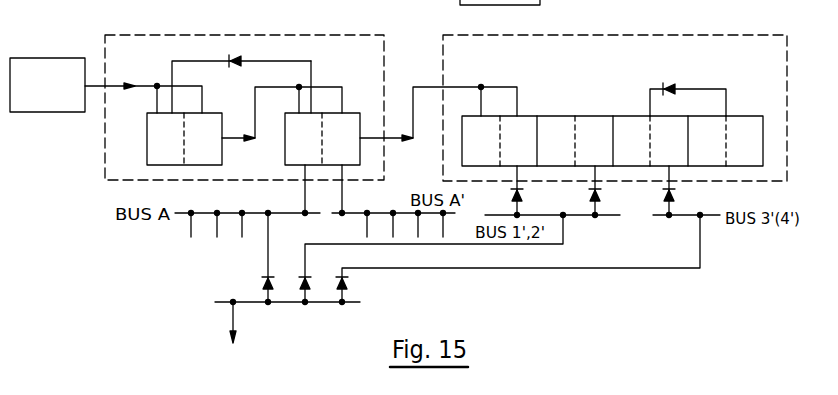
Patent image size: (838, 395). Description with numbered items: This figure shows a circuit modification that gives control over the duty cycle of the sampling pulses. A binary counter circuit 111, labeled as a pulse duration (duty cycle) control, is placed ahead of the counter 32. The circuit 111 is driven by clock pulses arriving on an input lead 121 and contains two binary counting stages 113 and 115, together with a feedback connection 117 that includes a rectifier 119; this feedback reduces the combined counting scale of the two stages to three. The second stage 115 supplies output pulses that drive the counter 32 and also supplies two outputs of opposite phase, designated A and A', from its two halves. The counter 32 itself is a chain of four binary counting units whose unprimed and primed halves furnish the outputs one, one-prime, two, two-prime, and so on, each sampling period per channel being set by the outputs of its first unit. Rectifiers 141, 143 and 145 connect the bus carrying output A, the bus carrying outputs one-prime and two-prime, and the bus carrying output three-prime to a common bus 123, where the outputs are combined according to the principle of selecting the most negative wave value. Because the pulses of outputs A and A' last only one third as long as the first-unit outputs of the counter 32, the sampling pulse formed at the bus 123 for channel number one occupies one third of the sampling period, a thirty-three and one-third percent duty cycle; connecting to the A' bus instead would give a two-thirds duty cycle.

The binary counter circuit 111 is at (384, 67).
The input lead 121 is at (97, 83).
The binary counting stage 113 is at (208, 112).
The rectifier 119 is at (231, 57).
The feedback connection 117 is at (342, 66).
The binary counting stage 115 is at (348, 112).
The counter 32 is at (720, 36).
The rectifier 141 is at (262, 284).
The rectifier 143 is at (301, 287).
The rectifier 145 is at (346, 282).
The bus 123 is at (349, 304).